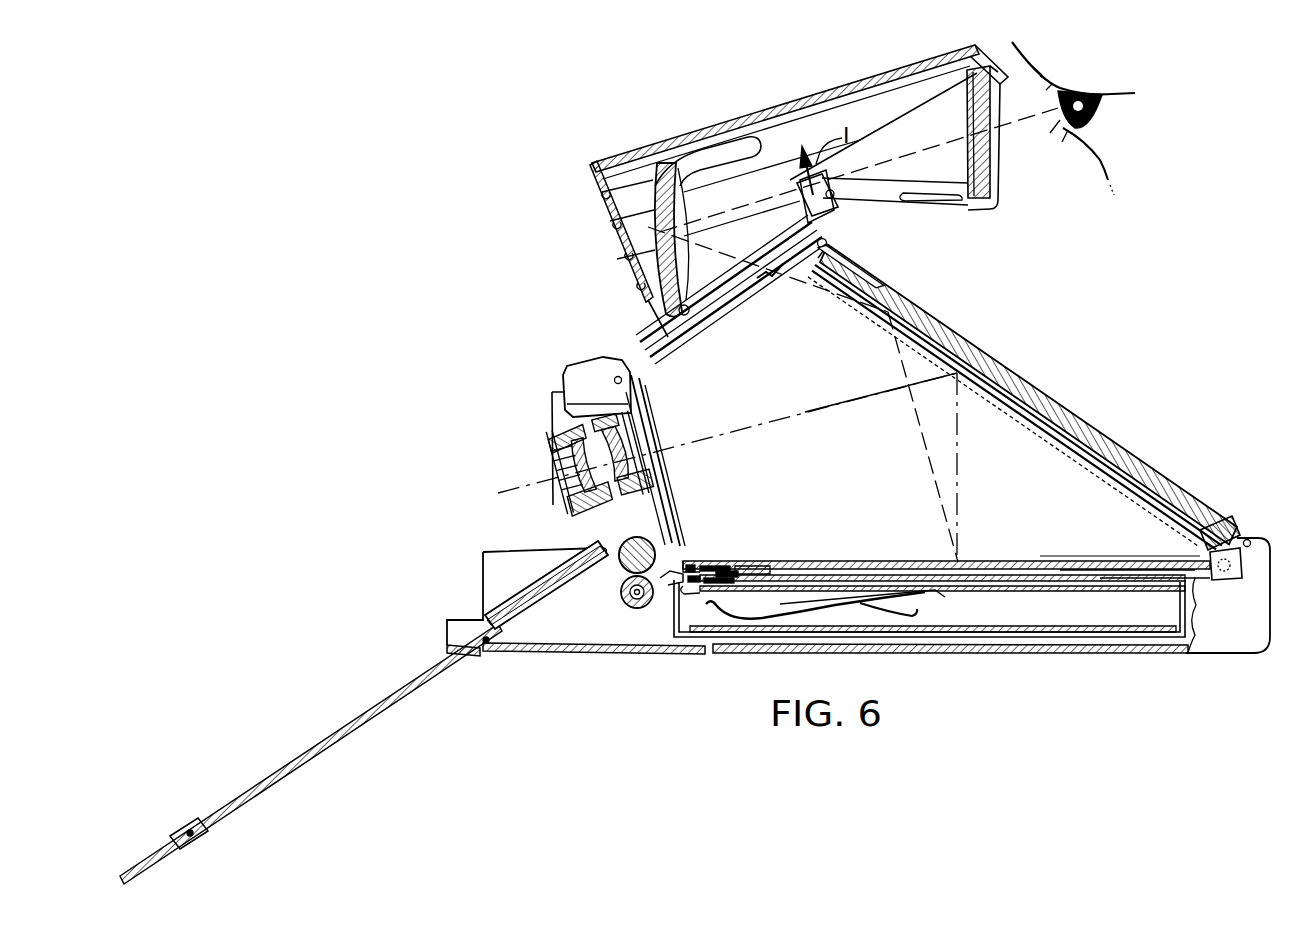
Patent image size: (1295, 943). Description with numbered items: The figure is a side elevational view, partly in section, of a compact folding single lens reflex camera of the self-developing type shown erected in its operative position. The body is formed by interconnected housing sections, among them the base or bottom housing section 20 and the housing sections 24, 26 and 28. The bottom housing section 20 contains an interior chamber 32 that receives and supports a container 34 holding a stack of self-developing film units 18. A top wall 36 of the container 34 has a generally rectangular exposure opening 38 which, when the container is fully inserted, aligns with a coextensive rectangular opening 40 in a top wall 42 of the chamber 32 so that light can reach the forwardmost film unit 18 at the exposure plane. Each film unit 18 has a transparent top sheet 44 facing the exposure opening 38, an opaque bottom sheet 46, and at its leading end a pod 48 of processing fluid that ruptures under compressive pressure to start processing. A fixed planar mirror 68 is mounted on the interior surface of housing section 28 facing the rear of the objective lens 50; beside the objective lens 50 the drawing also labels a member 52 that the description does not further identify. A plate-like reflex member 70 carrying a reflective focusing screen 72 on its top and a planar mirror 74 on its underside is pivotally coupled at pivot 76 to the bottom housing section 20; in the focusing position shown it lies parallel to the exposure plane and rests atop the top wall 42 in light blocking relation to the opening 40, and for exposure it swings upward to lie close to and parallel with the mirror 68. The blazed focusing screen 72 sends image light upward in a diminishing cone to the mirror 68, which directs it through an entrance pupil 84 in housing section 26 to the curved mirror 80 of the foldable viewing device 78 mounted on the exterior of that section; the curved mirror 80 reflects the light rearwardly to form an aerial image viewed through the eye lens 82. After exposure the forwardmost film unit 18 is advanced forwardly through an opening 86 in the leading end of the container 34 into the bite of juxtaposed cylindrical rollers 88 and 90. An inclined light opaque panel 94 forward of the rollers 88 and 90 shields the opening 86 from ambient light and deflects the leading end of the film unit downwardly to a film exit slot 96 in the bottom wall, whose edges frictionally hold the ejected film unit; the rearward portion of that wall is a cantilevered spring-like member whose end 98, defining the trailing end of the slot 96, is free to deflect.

The film unit 18 is at (797, 600).
The base or bottom housing section 20 is at (925, 660).
The housing section 24 is at (548, 384).
The housing section 26 is at (641, 341).
The housing section 28 is at (1072, 397).
The interior chamber 32 is at (852, 628).
The film container 34 is at (1057, 634).
The top wall 36 is at (714, 566).
The exposure opening 38 is at (783, 566).
The rectangular opening 40 is at (745, 566).
The top wall 42 is at (727, 568).
The transparent top sheet 44 is at (843, 575).
The opaque bottom sheet 46 is at (877, 582).
The pod 48 is at (694, 566).
The objective lens 50 is at (567, 477).
The side wall 52 is at (636, 432).
The planar mirror 68 is at (1053, 440).
The reflex member 70 is at (1046, 550).
The reflective focusing screen 72 is at (1078, 567).
The planar mirror 74 is at (1110, 572).
The pivot 76 is at (1233, 537).
The foldable viewing device 78 is at (583, 148).
The curved mirror 80 is at (674, 205).
The eye lens 82 is at (992, 165).
The entrance pupil 84 is at (779, 272).
The opening 86 is at (668, 586).
The cylindrical roller 88 is at (625, 565).
The cylindrical roller 90 is at (628, 600).
The inclined light opaque panel 94 is at (485, 553).
The film exit slot 96 is at (484, 650).
The end 98 is at (495, 653).